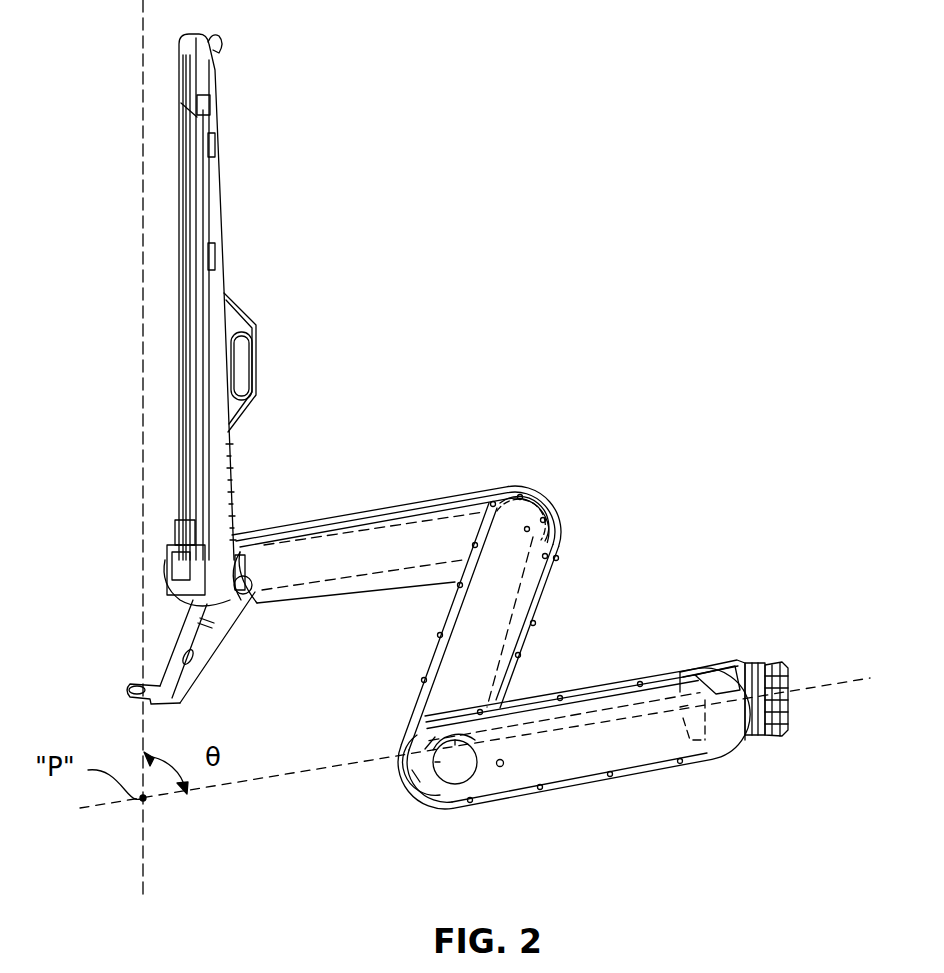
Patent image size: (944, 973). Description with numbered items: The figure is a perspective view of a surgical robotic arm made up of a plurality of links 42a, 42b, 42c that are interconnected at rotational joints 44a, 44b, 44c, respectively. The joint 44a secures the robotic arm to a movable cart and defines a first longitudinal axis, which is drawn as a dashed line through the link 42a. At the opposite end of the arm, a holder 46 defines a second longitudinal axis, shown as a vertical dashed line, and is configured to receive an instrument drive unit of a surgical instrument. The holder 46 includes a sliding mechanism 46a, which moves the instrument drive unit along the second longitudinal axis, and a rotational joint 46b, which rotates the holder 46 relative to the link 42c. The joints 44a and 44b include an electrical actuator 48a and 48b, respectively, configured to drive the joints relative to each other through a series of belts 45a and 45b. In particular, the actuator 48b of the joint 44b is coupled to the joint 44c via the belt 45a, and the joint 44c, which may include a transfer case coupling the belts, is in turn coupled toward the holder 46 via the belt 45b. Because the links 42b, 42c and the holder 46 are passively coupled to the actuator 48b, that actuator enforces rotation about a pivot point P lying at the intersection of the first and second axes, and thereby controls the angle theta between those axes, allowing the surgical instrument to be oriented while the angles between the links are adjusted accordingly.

The holder 46 is at (208, 90).
The sliding mechanism 46a is at (180, 233).
The rotational joint 46b is at (237, 553).
The link 42c is at (330, 514).
The belt 45b is at (440, 513).
The rotational joint 44c is at (543, 535).
The link 42b is at (494, 672).
The belt 45a is at (528, 588).
The rotational joint 44b is at (457, 803).
The electrical actuator 48b is at (413, 773).
The link 42a is at (600, 760).
The rotational joint 44a is at (780, 733).
The electrical actuator 48a is at (758, 665).